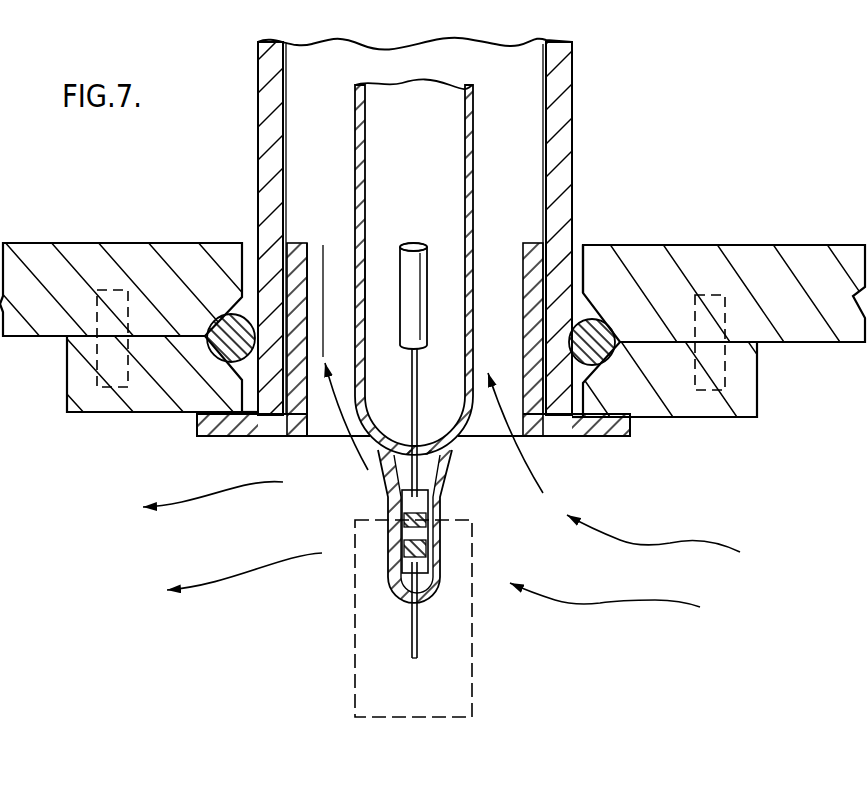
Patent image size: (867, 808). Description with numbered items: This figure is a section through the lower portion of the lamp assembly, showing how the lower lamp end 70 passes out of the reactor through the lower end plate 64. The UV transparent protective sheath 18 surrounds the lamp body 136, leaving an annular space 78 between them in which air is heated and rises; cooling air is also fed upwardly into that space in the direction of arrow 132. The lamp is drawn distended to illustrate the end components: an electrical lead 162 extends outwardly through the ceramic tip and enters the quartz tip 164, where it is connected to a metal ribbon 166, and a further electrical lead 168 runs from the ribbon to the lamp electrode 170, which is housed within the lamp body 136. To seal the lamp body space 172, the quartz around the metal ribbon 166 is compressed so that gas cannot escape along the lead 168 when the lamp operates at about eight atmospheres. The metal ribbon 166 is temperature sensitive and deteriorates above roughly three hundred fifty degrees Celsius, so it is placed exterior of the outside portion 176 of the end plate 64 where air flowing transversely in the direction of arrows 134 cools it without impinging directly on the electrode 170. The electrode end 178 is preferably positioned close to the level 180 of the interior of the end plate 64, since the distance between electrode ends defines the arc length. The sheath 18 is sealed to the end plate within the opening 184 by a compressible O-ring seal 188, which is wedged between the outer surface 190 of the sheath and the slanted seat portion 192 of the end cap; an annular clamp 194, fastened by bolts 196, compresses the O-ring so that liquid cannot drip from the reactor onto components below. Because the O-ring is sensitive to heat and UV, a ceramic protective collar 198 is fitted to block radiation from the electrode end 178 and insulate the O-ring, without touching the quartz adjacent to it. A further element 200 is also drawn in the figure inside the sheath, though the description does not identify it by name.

The protective sheath 18 is at (557, 72).
The outer surface 190 is at (262, 58).
The annular space 78 is at (528, 115).
The lamp body 136 is at (355, 116).
The lamp body space 172 is at (397, 267).
The lamp electrode 170 is at (430, 272).
The electrode end 178 is at (415, 243).
The electrical lead 168 is at (420, 372).
The electrical lead 162 is at (418, 640).
The quartz tip 164 is at (433, 586).
The metal ribbon 166 is at (410, 535).
The lamp end 70 is at (473, 690).
The liner sleeve 200 is at (324, 262).
The protective collar 198 is at (312, 420).
The opening 184 is at (250, 250).
The slanted seat portion 192 is at (217, 320).
The annular clamp 194 is at (72, 383).
The O-ring seal 188 is at (197, 416).
The end plate 64 is at (753, 257).
The interior surface 180 is at (633, 244).
The outside portion 176 is at (813, 347).
The bolts 196 is at (726, 302).
The arrow 132 is at (527, 470).
The arrows 134 is at (677, 600).